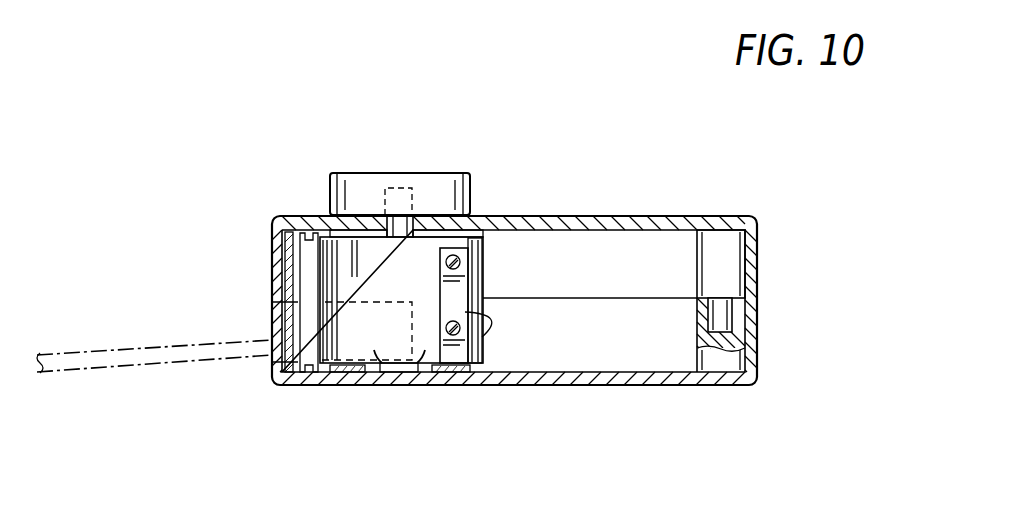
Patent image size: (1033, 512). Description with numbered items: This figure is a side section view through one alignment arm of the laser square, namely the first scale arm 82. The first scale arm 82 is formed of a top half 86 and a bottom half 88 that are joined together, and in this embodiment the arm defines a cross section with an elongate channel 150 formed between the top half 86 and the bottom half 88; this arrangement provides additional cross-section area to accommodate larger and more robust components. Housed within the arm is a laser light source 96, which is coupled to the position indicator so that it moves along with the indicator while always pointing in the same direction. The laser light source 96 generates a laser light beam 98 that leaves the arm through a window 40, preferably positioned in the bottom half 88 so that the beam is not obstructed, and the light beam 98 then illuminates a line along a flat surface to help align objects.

The window 40 is at (273, 262).
The first scale arm 82 is at (650, 217).
The top half 86 is at (757, 257).
The bottom half 88 is at (757, 345).
The laser light source 96 is at (422, 318).
The laser light beam 98 is at (120, 362).
The elongate channel 150 is at (560, 257).